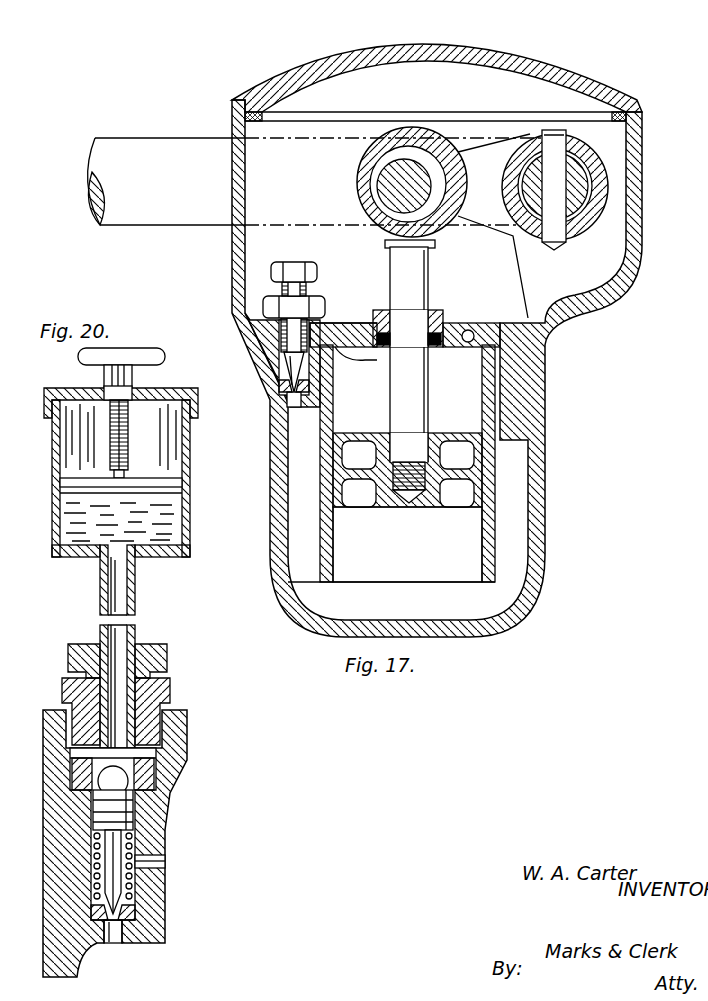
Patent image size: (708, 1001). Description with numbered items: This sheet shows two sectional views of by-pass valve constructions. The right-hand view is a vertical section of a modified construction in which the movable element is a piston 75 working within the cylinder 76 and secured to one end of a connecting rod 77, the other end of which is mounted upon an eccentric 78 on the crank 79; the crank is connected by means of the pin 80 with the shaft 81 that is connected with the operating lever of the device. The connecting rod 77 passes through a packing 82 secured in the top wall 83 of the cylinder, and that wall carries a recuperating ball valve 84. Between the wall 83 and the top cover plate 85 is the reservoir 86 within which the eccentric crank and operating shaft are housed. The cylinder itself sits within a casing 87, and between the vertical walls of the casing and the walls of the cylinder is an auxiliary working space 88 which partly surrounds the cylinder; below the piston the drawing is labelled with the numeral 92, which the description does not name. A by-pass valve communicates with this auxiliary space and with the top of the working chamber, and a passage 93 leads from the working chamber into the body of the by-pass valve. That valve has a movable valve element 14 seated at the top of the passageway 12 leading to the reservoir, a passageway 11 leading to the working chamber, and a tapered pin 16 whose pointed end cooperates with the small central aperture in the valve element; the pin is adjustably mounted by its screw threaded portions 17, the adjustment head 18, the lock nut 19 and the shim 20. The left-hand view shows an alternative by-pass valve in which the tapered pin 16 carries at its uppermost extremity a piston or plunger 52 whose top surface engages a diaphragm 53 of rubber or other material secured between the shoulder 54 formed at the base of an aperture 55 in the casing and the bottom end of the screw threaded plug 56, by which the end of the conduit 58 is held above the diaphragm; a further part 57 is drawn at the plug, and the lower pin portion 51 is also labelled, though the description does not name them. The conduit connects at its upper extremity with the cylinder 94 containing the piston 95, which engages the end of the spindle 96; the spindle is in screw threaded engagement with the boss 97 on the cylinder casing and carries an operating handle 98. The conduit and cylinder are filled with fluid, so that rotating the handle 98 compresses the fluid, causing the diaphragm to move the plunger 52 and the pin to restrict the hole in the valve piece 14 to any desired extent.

In FIG. 17, the top cover plate 85 is at (374, 58).
In FIG. 17, the reservoir 86 is at (255, 150).
In FIG. 17, the eccentric 78 is at (420, 148).
In FIG. 17, the crank 79 is at (385, 186).
In FIG. 17, the pin 80 is at (548, 136).
In FIG. 17, the shaft 81 is at (590, 182).
In FIG. 17, the adjustment head 18 is at (293, 270).
In FIG. 17, the lock nut 19 is at (263, 304).
In FIG. 17, the shim 20 is at (281, 321).
In FIG. 17, the screw threaded portions 17 is at (290, 341).
In FIG. 17, the top wall 83 is at (340, 326).
In FIG. 17, the packing 82 is at (426, 320).
In FIG. 17, the recuperating ball valve 84 is at (468, 330).
In FIG. 17, the movable valve element 14 is at (283, 389).
In FIG. 20, the movable valve element 14 is at (128, 912).
In FIG. 17, the passageway 12 is at (287, 407).
In FIG. 20, the passageway 12 is at (121, 937).
In FIG. 17, the passage 93 is at (407, 390).
In FIG. 17, the piston 75 is at (396, 447).
In FIG. 17, the connecting rod 77 is at (420, 398).
In FIG. 17, the cylinder 76 is at (495, 466).
In FIG. 17, the casing 87 is at (274, 492).
In FIG. 17, the auxiliary working space 88 is at (518, 498).
In FIG. 17, the chamber 92 is at (484, 592).
In FIG. 20, the operating handle 98 is at (78, 357).
In FIG. 20, the boss 97 is at (140, 393).
In FIG. 20, the spindle 96 is at (112, 432).
In FIG. 20, the cylinder 94 is at (52, 530).
In FIG. 20, the piston 95 is at (150, 498).
In FIG. 20, the conduit 58 is at (136, 592).
In FIG. 20, the nut 57 is at (164, 662).
In FIG. 20, the screw threaded plug 56 is at (166, 695).
In FIG. 20, the aperture 55 is at (85, 725).
In FIG. 20, the diaphragm 53 is at (152, 764).
In FIG. 20, the shoulder 54 is at (134, 791).
In FIG. 20, the piston or plunger 52 is at (136, 815).
In FIG. 20, the tapered pin 16 is at (136, 840).
In FIG. 20, the passageway 11 is at (166, 862).
In FIG. 20, the needle 51 is at (122, 885).